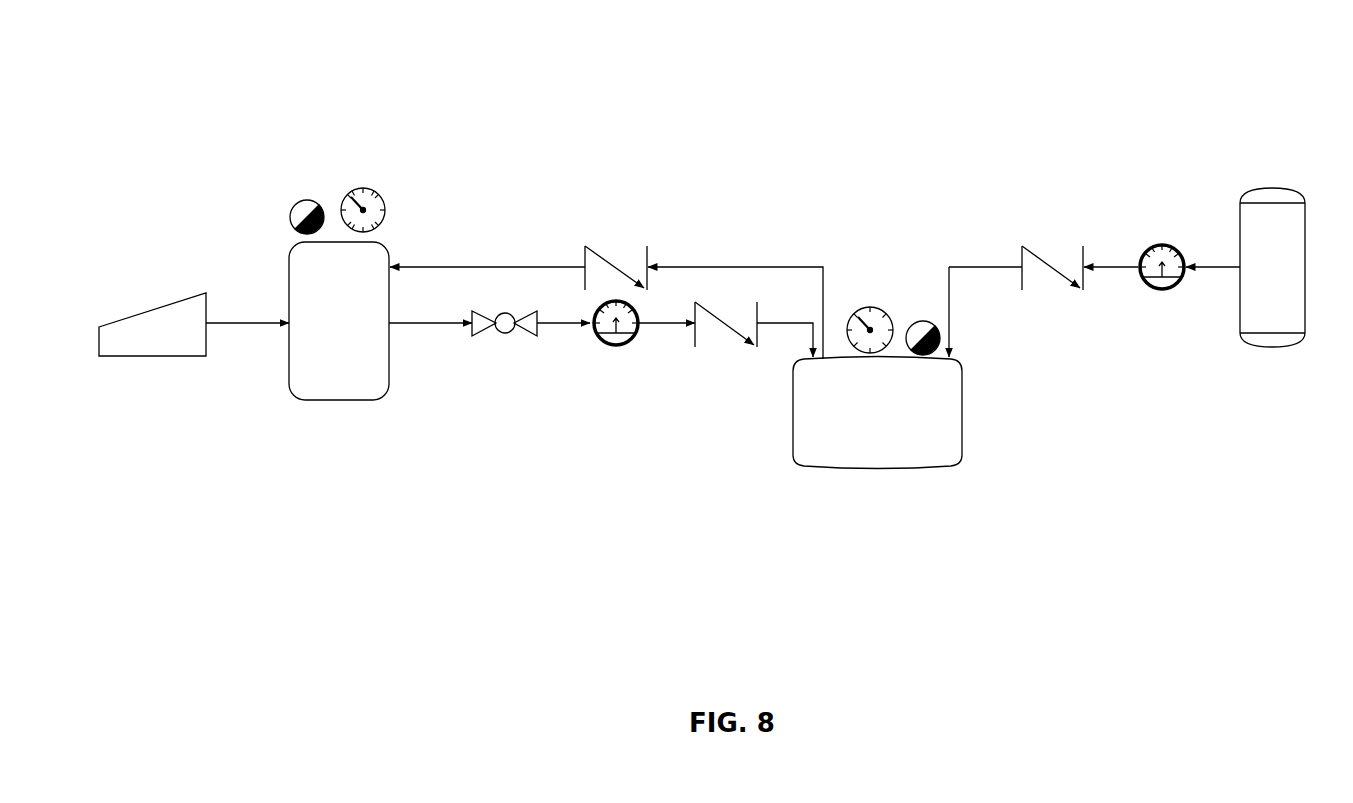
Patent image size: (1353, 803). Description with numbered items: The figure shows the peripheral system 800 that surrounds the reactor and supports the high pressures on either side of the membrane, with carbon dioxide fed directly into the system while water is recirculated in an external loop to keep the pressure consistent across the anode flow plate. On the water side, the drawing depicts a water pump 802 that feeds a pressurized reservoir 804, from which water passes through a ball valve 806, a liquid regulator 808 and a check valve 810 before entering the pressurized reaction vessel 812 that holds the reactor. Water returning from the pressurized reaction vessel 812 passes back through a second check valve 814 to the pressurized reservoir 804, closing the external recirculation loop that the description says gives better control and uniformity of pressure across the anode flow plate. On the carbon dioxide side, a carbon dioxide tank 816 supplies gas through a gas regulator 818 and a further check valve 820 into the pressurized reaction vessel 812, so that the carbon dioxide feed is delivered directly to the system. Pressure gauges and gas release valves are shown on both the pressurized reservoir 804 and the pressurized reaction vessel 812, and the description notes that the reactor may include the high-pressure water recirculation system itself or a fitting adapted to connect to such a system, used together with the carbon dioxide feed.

The experimental pressurized reaction system 800 is at (718, 364).
The water pump 802 is at (155, 356).
The pressurized reservoir 804 is at (338, 400).
The ball valve 806 is at (505, 333).
The liquid regulator 808 is at (616, 346).
The check valve 810 is at (718, 347).
The pressurized reaction vessel 812 is at (877, 468).
The check valve 814 is at (618, 247).
The carbon dioxide tank 816 is at (1272, 347).
The gas regulator 818 is at (1162, 289).
The check valve 820 is at (1057, 245).